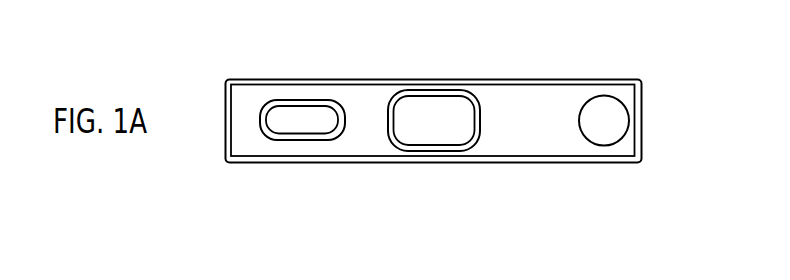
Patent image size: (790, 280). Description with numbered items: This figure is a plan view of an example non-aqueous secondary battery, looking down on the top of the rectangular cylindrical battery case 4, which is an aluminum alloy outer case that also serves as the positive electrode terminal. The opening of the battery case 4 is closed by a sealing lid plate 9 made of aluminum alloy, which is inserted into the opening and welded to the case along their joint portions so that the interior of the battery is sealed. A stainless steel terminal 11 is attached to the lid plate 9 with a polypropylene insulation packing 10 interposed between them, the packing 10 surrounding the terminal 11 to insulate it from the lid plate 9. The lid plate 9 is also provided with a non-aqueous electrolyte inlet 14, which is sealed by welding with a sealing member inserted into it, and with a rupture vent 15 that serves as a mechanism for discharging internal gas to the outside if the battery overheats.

The battery case 4 is at (643, 117).
The sealing lid plate 9 is at (540, 110).
The insulation packing 10 is at (477, 121).
The terminal 11 is at (435, 112).
The non-aqueous electrolyte inlet 14 is at (604, 110).
The rupture vent 15 is at (308, 120).